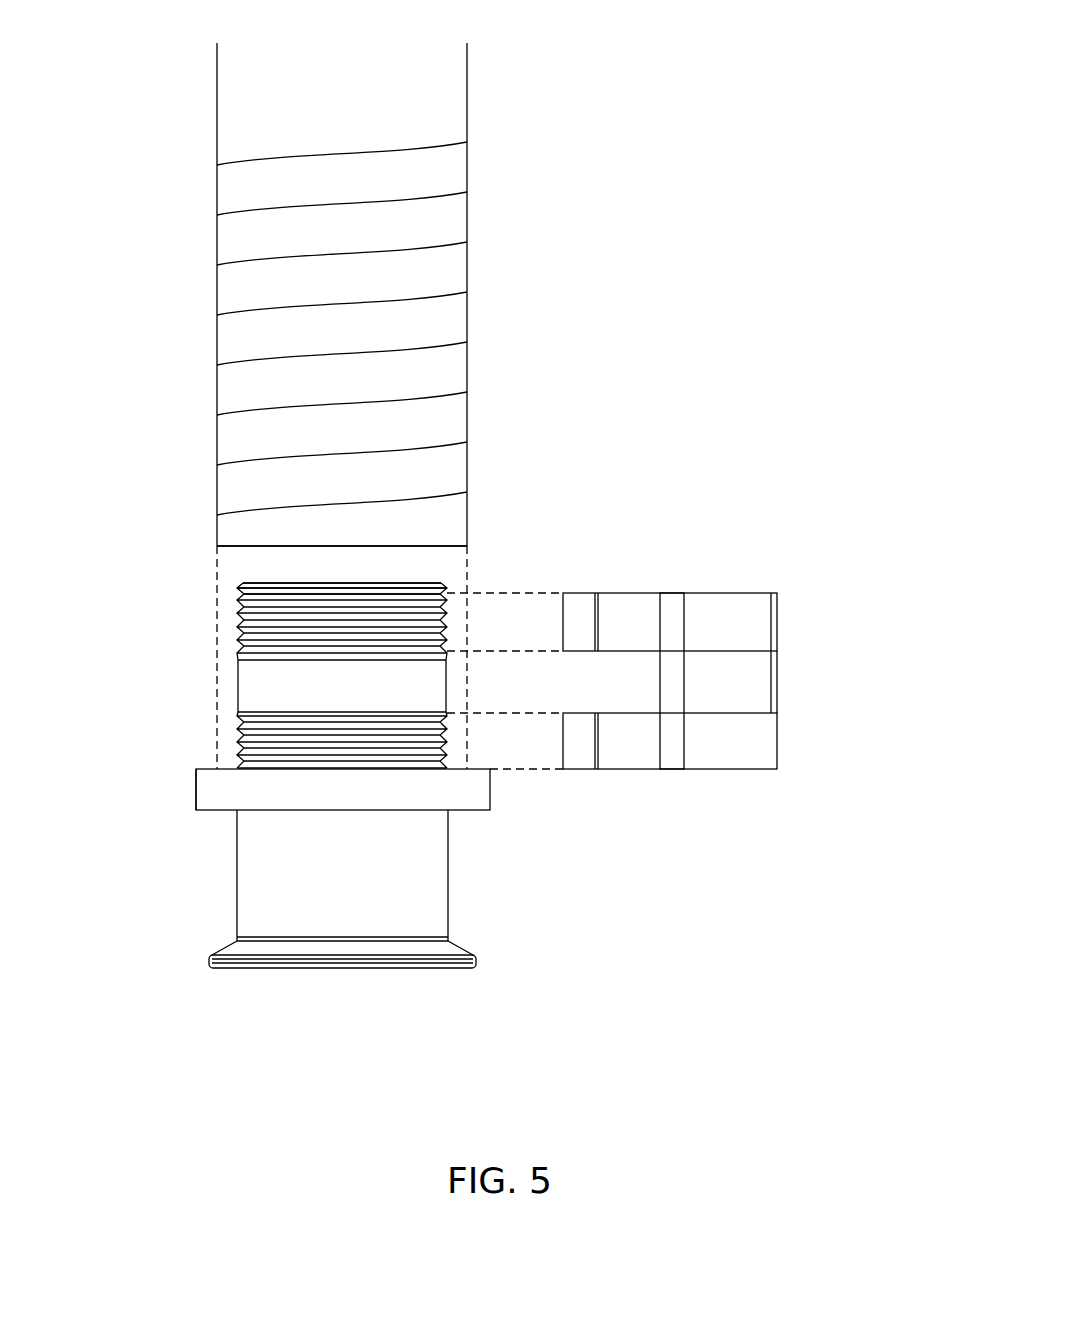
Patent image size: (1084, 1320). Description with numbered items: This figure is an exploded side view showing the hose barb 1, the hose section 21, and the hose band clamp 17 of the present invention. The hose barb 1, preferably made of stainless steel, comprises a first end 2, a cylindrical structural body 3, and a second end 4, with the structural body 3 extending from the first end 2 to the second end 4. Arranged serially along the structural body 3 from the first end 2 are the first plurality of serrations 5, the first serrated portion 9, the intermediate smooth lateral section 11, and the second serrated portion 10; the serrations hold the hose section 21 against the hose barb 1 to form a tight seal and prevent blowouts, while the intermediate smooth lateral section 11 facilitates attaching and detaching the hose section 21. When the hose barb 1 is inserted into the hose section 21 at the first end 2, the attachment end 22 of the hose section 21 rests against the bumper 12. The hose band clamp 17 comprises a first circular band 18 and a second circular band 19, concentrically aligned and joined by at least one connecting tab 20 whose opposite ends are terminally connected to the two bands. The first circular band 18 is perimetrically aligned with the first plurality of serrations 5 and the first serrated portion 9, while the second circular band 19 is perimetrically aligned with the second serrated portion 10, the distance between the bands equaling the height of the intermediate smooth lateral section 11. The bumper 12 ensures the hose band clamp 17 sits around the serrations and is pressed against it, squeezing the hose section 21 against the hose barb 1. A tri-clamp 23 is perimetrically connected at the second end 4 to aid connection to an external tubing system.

The hose barb 1 is at (142, 827).
The first end 2 is at (364, 657).
The structural body 3 is at (437, 908).
The second end 4 is at (337, 968).
The first plurality of serrations 5 is at (246, 597).
The first serrated portion 9 is at (462, 630).
The second serrated portion 10 is at (462, 733).
The intermediate smooth lateral section 11 is at (329, 701).
The bumper 12 is at (483, 797).
The hose band clamp 17 is at (750, 683).
The first circular band 18 is at (730, 605).
The second circular band 19 is at (740, 757).
The connecting tab 20 is at (675, 697).
The hose section 21 is at (170, 318).
The attachment end 22 is at (245, 546).
The tri-clamp 23 is at (220, 928).